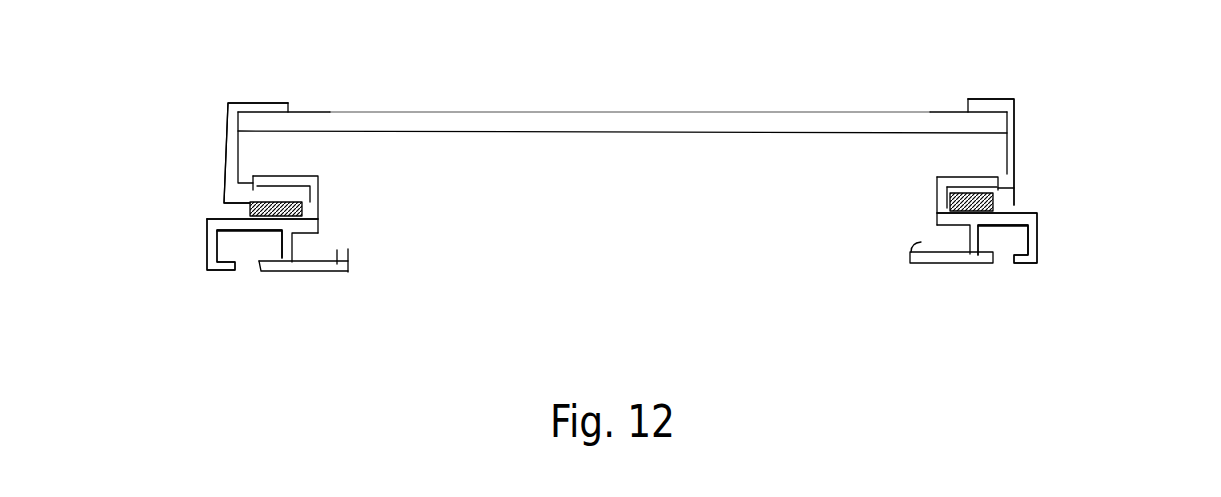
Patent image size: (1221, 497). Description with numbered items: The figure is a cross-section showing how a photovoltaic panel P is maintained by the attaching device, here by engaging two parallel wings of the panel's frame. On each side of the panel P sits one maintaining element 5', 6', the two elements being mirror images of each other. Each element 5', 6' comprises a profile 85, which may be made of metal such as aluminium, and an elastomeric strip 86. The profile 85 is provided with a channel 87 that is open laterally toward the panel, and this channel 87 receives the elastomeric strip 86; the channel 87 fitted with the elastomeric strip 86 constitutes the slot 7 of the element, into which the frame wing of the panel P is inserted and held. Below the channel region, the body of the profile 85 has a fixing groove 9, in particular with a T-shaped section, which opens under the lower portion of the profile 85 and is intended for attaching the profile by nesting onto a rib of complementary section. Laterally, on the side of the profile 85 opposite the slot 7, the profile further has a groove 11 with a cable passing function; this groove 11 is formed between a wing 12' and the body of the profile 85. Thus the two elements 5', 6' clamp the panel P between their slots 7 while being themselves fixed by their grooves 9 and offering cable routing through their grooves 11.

The photovoltaic panel P is at (638, 118).
The element 5' is at (207, 186).
The element 6' is at (1069, 183).
The slot 7 is at (243, 181).
The fixing groove 9 is at (250, 234).
The groove 11 is at (319, 252).
The wing 12' is at (626, 294).
The profile 85 is at (356, 224).
The elastomeric strip 86 is at (303, 206).
The channel 87 is at (220, 207).